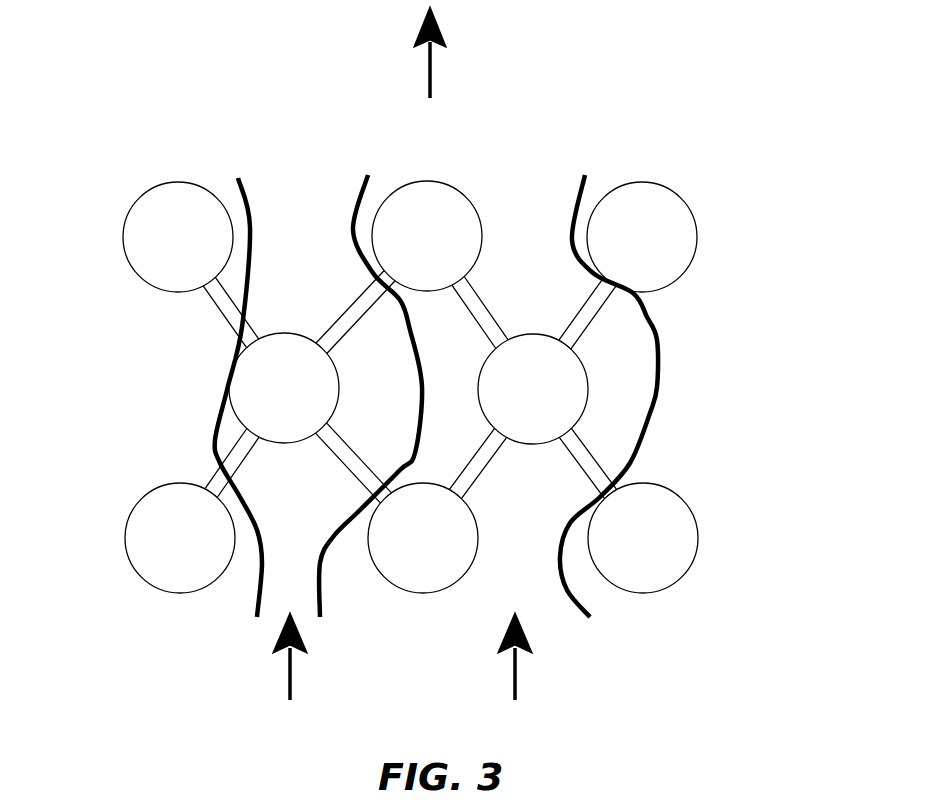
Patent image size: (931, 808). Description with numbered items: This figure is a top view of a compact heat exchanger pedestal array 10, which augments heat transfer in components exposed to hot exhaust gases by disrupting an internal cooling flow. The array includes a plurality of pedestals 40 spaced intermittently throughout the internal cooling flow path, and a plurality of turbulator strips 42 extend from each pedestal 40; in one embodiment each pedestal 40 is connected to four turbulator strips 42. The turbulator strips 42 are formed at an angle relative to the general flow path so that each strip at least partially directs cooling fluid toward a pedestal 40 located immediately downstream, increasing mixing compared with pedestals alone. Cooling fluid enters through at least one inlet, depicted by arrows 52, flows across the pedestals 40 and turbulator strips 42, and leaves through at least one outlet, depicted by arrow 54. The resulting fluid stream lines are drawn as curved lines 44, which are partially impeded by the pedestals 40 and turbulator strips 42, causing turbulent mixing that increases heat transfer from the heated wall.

The compact heat exchanger pedestal array 10 is at (623, 106).
The pedestal 40 is at (192, 249).
The turbulator strip 42 is at (208, 313).
The fluid stream lines 44 is at (247, 201).
The inlet 52 is at (402, 672).
The outlet 54 is at (430, 68).